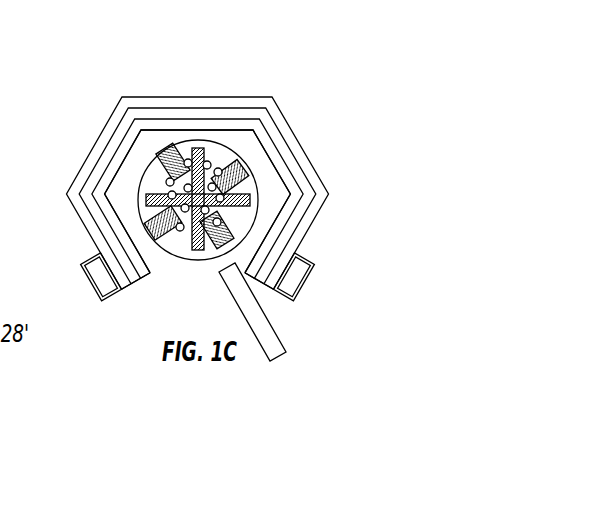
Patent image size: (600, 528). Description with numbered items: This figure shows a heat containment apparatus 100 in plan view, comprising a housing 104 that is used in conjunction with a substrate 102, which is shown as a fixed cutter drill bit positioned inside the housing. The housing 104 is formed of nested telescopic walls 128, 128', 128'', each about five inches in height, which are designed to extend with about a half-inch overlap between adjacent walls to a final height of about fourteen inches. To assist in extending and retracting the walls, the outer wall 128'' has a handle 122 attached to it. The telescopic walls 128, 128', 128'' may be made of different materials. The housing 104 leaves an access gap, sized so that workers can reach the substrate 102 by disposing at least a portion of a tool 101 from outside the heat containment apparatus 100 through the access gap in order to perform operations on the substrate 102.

The heat containment apparatus 100 is at (127, 36).
The tool 101 is at (283, 366).
The substrate 102 is at (207, 253).
The housing 104 is at (65, 97).
The handle 122 is at (310, 284).
The telescopic wall 128 is at (198, 192).
The telescopic wall 128' is at (216, 196).
The telescopic wall 128'' is at (239, 198).